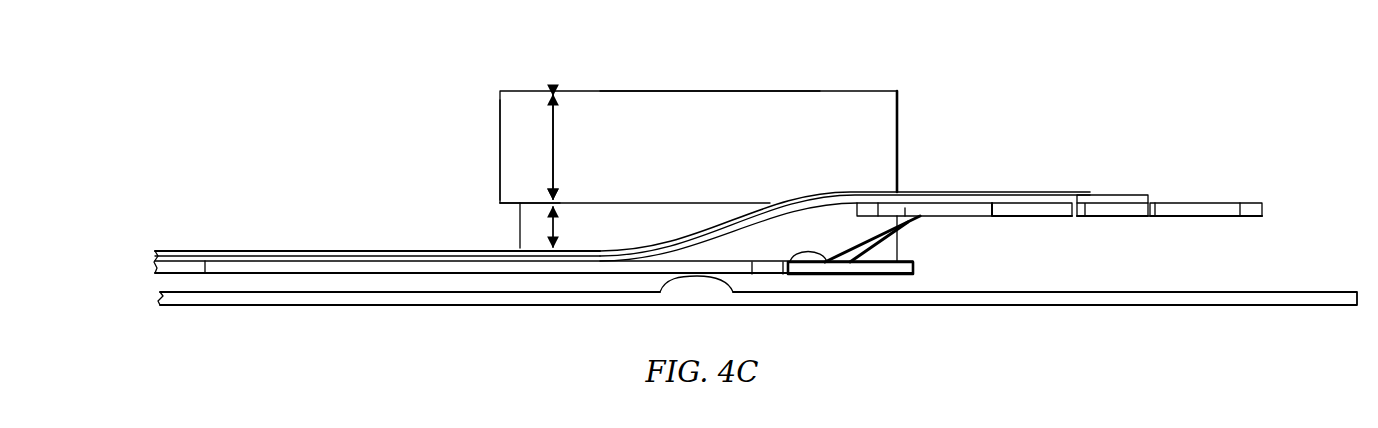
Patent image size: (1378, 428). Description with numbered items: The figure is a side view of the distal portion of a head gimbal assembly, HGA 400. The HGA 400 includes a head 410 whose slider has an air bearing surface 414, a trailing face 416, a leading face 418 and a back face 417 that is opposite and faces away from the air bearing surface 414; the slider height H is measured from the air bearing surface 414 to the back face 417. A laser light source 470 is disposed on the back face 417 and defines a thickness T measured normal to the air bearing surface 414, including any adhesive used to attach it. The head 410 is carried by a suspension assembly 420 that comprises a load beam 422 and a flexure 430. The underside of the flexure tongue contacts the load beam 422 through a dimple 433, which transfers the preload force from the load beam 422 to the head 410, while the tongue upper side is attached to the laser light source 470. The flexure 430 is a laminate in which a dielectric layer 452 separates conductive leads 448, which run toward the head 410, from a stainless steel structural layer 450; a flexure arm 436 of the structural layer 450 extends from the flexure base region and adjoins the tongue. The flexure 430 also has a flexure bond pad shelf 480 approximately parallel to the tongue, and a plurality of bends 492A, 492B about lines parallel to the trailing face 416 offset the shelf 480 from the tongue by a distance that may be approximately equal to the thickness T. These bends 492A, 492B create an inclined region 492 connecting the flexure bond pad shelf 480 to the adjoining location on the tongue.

The HGA 400 is at (932, 65).
The head 410 is at (684, 156).
The air bearing surface 414 is at (714, 91).
The trailing face 416 is at (898, 118).
The leading face 418 is at (500, 133).
The back face 417 is at (500, 213).
The laser light source 470 is at (598, 236).
The suspension assembly 420 is at (113, 250).
The flexure 430 is at (140, 258).
The flexure arm 436 is at (250, 268).
The load beam 422 is at (310, 300).
The dimple 433 is at (658, 290).
The inclined region 492 is at (875, 238).
The bend 492A is at (793, 263).
The bend 492B is at (905, 212).
The flexure bond pad shelf 480 is at (1000, 192).
The conductive leads 448 is at (1055, 192).
The dielectric layer 452 is at (1112, 195).
The structural layer 450 is at (1207, 202).